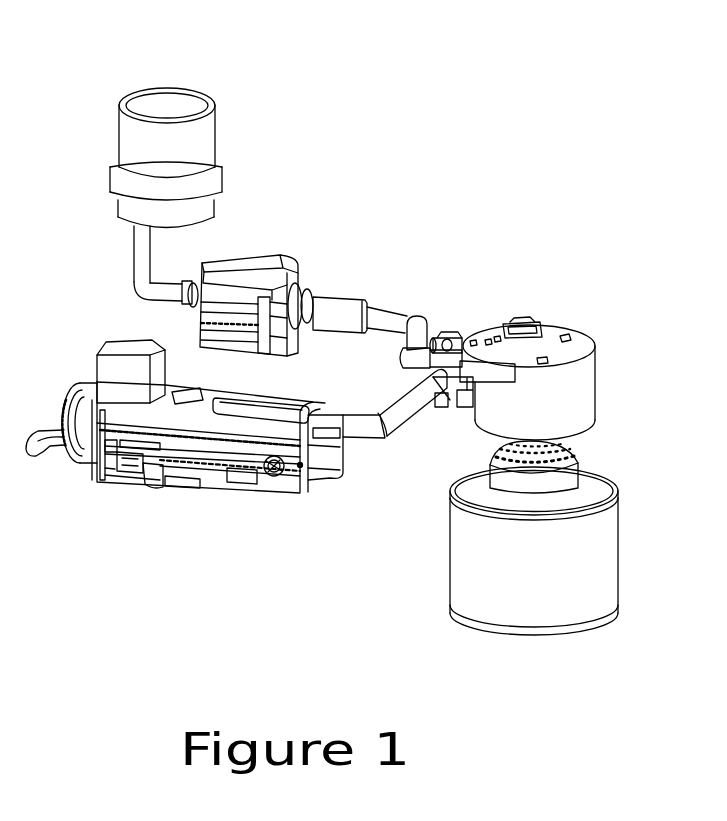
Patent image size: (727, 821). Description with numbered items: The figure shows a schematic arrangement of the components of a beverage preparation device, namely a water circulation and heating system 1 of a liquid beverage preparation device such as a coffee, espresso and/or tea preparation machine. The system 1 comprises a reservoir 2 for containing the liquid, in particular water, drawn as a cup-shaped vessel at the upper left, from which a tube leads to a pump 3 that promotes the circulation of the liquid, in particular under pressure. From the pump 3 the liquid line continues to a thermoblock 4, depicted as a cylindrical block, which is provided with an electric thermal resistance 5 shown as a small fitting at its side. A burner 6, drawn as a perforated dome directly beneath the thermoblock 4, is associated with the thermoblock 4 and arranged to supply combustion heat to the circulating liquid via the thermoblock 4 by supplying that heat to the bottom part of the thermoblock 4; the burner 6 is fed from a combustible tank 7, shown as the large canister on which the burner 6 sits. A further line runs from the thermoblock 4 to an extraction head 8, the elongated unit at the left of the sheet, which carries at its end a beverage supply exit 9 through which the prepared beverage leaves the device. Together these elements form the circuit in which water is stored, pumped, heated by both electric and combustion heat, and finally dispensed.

The water circulation and heating system 1 is at (497, 145).
The reservoir 2 is at (205, 142).
The pump 3 is at (252, 255).
The thermoblock 4 is at (522, 360).
The electric thermal resistance 5 is at (453, 346).
The burner 6 is at (571, 470).
The combustible tank 7 is at (468, 567).
The extraction head 8 is at (287, 483).
The beverage supply exit 9 is at (44, 448).